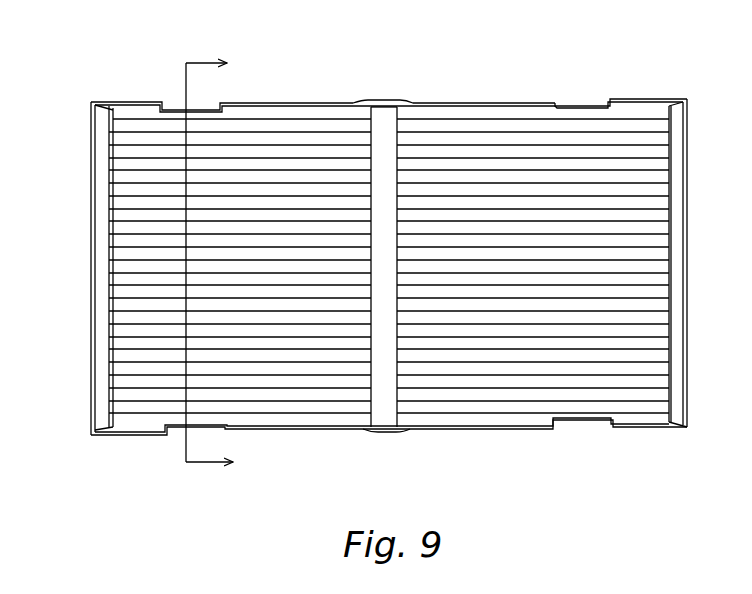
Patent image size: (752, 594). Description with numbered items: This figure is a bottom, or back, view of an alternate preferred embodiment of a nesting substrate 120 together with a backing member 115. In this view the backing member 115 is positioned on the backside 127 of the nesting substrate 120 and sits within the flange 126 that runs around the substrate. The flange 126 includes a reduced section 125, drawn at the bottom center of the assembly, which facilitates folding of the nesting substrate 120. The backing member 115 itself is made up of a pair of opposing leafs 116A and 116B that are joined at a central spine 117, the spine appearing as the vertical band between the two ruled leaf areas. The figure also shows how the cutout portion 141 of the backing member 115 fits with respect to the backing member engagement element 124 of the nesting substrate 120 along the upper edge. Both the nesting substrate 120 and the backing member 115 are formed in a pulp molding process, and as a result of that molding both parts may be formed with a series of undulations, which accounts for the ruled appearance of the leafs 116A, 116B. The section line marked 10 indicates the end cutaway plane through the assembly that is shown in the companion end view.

The nesting substrate 120 is at (112, 51).
The backing member 115 is at (638, 76).
The flange 126 is at (91, 334).
The backside 127 is at (107, 184).
The cutout portion 141 is at (553, 103).
The backing member engagement element 124 is at (597, 100).
The reduced section 125 is at (393, 428).
The spine 117 is at (383, 113).
The leaf 116A is at (326, 418).
The leaf 116B is at (490, 418).
The section line 10- 10 is at (228, 266).